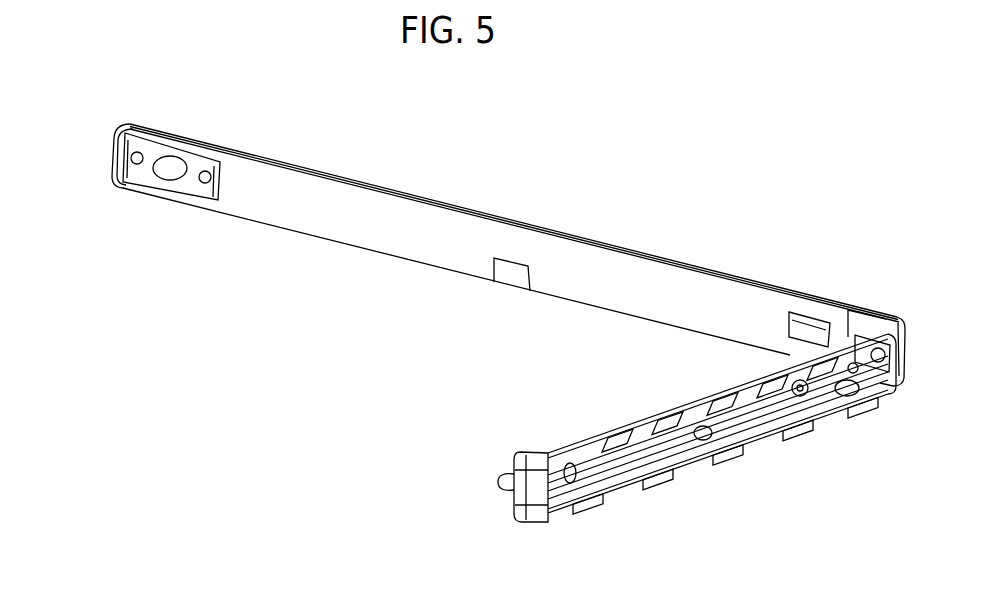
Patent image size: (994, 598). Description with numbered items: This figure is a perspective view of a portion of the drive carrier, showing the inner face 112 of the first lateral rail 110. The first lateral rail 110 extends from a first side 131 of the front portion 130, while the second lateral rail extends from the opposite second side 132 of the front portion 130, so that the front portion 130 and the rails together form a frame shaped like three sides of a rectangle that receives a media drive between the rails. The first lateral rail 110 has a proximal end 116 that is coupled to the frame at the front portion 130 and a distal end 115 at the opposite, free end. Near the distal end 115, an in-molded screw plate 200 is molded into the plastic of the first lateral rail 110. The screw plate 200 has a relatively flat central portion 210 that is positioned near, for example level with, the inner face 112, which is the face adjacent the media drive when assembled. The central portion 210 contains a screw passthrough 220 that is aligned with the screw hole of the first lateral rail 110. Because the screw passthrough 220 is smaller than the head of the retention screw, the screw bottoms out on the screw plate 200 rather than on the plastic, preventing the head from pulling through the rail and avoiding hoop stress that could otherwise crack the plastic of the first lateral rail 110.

The first lateral rail 110 is at (400, 194).
The inner face 112 is at (384, 246).
The distal end 115 is at (122, 106).
The proximal end 116 is at (887, 300).
The front portion 130 is at (690, 470).
The first side 131 is at (902, 414).
The second side 132 is at (488, 518).
The in-molded screw plate 200 is at (157, 193).
The central portion 210 is at (124, 182).
The screw passthrough 220 is at (168, 157).